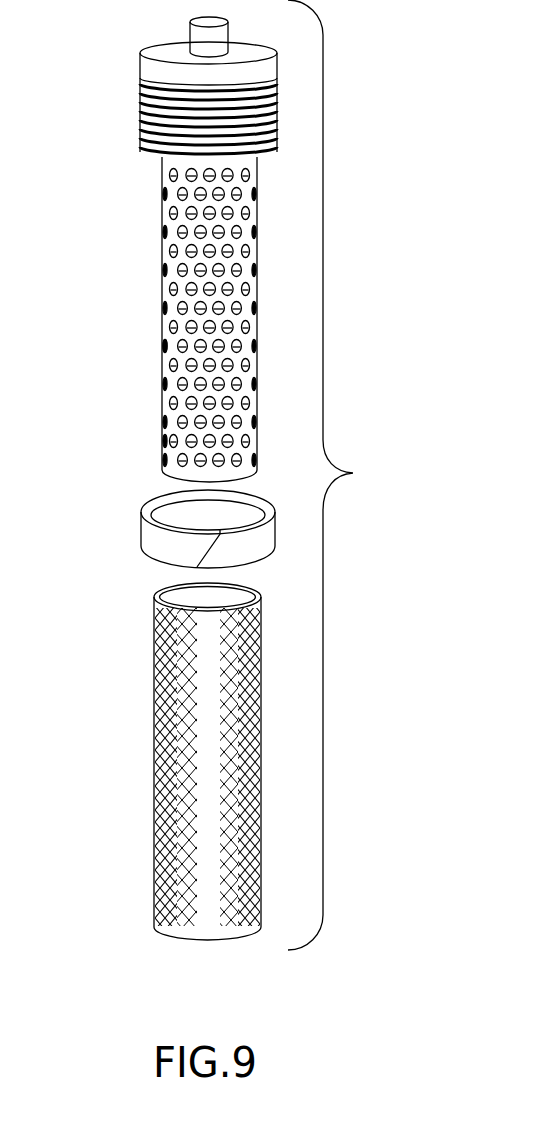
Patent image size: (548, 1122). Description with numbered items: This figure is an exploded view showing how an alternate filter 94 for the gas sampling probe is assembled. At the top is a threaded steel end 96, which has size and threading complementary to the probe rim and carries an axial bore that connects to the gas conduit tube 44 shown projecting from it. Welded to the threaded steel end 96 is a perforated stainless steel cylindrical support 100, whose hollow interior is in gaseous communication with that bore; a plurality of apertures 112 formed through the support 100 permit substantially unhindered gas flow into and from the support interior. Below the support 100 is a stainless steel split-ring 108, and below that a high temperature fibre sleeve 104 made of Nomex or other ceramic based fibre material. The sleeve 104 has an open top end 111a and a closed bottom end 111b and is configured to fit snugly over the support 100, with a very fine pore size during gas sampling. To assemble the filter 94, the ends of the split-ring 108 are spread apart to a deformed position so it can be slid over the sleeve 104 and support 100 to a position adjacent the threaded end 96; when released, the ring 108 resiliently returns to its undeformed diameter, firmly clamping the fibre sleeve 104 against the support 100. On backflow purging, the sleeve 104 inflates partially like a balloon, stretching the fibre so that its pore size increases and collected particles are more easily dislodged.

The gas conduit tube 44 is at (190, 33).
The filter 94 is at (344, 475).
The threaded steel end 96 is at (142, 133).
The perforated stainless steel cylindrical support 100 is at (160, 280).
The apertures 112 is at (168, 344).
The stainless steel split-ring 108 is at (138, 540).
The high temperature fibre sleeve 104 is at (205, 776).
The open top end 111a is at (167, 588).
The closed bottom end 111b is at (205, 940).